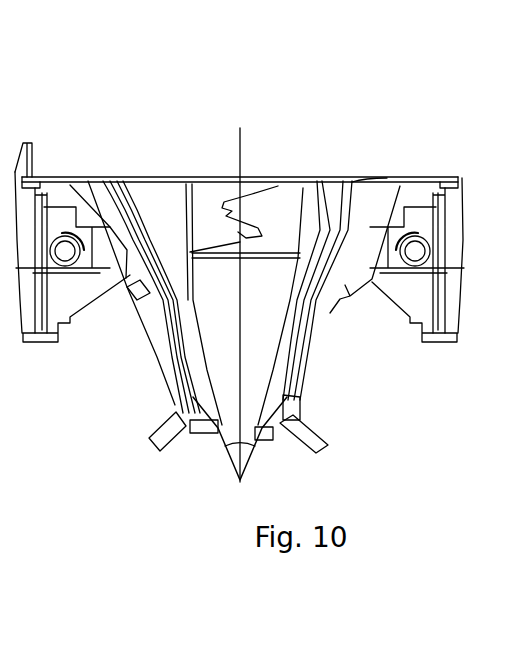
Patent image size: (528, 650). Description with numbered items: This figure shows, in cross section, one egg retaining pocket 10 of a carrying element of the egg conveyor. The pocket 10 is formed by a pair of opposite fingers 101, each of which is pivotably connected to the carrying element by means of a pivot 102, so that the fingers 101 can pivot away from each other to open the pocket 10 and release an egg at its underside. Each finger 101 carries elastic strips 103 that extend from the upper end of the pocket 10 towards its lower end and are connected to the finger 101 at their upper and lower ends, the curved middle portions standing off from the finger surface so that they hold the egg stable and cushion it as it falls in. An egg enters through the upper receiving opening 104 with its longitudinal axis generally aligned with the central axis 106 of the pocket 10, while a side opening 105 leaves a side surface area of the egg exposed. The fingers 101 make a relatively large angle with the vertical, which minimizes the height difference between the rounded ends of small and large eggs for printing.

The egg retaining pocket 10 is at (238, 284).
The finger 101 is at (158, 333).
The pivot 102 is at (63, 226).
The elastic strip 103 is at (150, 233).
The upper receiving opening 104 is at (148, 175).
The side opening 105 is at (212, 333).
The central axis 106 is at (238, 335).